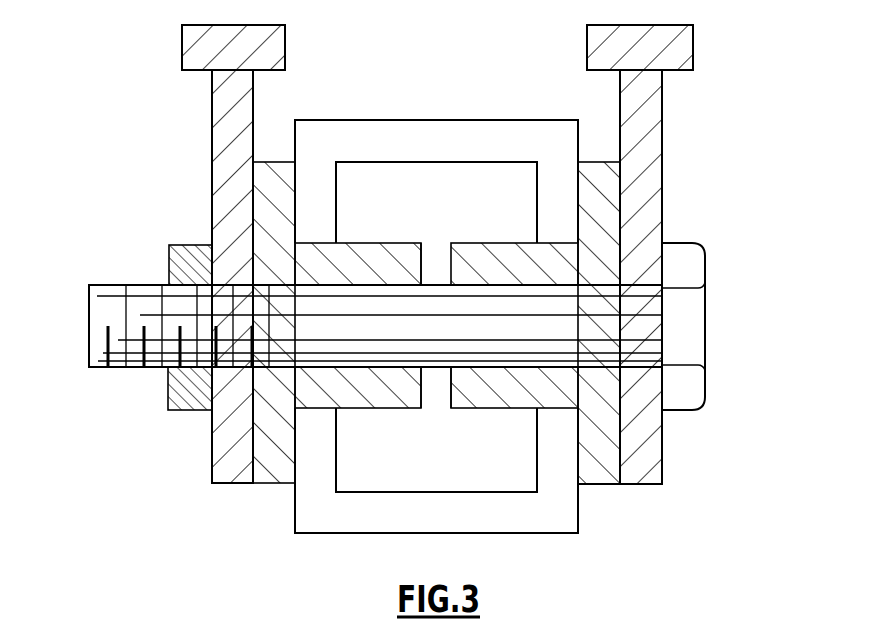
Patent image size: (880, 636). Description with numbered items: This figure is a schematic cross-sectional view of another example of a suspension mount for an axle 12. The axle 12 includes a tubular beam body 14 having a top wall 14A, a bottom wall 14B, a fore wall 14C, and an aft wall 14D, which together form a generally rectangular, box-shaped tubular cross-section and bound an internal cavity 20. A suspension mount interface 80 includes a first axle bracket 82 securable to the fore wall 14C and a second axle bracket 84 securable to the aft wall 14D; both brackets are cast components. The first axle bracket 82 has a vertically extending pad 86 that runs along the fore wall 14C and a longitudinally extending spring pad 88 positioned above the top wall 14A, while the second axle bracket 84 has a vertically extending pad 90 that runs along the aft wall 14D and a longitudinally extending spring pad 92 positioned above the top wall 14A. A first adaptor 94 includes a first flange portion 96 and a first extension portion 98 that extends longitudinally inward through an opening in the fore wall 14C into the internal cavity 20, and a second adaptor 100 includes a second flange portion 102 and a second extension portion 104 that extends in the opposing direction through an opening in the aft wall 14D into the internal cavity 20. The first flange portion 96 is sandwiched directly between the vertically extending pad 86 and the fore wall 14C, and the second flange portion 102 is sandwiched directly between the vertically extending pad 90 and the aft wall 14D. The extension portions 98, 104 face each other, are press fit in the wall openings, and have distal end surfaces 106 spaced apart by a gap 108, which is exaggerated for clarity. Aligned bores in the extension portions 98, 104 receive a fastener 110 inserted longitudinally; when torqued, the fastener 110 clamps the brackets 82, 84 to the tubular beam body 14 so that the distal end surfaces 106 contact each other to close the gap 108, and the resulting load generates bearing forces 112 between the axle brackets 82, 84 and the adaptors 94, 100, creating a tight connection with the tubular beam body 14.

The suspension mount interface 80 is at (138, 88).
The longitudinally extending spring pad 92 is at (277, 50).
The second axle bracket 84 is at (246, 254).
The vertically extending pad 90 is at (222, 457).
The longitudinally extending spring pad 88 is at (667, 38).
The first axle bracket 82 is at (655, 242).
The vertically extending pad 86 is at (655, 145).
The bearing forces 112 is at (253, 160).
The first flange portion 96 is at (595, 186).
The second adaptor 100 is at (275, 477).
The first adaptor 94 is at (592, 478).
The tubular beam body 14 is at (457, 330).
The top wall 14A is at (353, 137).
The bottom wall 14B is at (423, 525).
The fore wall 14C is at (543, 227).
The aft wall 14D is at (322, 465).
The internal cavity 20 is at (498, 482).
The axle 12 is at (488, 117).
The second extension portion 104 is at (368, 252).
The gap 108 is at (435, 231).
The second flange portion 102 is at (283, 450).
The distal end surfaces 106 is at (417, 410).
The first extension portion 98 is at (483, 392).
The fastener 110 is at (695, 318).